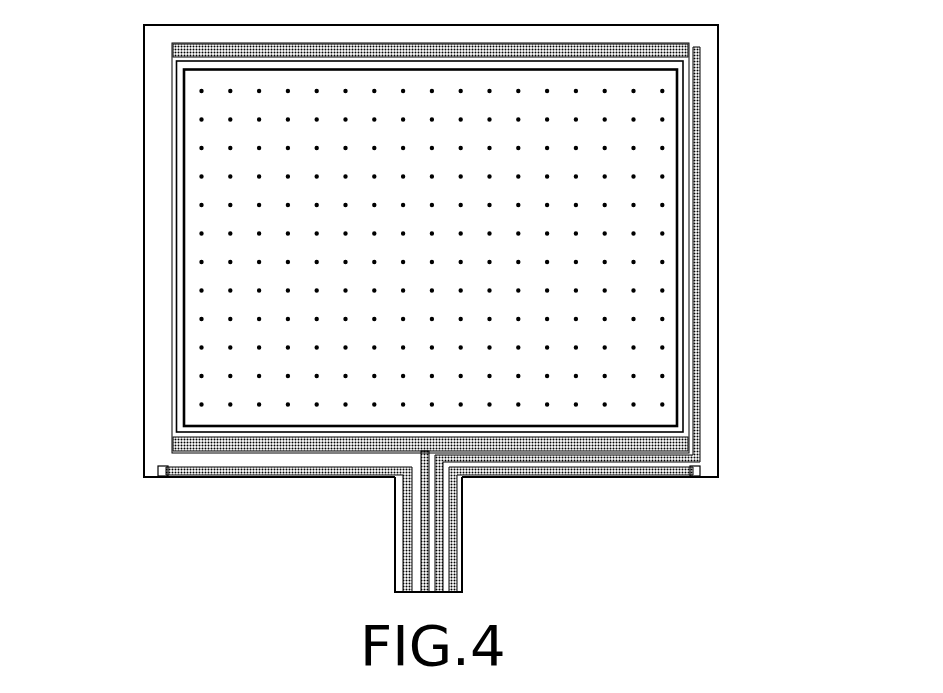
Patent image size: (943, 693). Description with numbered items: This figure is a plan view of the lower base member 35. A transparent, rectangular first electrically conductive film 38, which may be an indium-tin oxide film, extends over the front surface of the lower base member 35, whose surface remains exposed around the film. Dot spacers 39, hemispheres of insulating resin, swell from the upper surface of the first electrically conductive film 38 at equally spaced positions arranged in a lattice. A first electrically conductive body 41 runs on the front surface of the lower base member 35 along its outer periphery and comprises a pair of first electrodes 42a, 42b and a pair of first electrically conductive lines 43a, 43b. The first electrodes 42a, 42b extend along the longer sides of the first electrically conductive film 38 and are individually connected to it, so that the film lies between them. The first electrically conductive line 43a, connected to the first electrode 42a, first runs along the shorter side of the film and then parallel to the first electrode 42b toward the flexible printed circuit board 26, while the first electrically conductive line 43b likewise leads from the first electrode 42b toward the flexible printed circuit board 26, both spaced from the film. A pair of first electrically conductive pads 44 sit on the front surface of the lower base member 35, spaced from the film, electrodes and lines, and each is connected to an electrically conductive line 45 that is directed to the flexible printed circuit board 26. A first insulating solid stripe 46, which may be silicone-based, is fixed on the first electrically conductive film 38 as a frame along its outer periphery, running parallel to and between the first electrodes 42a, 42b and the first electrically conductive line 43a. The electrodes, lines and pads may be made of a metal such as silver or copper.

The flexible printed circuit board 26 is at (462, 557).
The lower base member 35 is at (719, 60).
The first electrically conductive film 38 is at (197, 127).
The dot spacers 39 is at (199, 176).
The first electrically conductive body 41 is at (700, 228).
The first electrode 42a is at (174, 48).
The first electrode 42b is at (174, 444).
The first electrically conductive line 43a is at (701, 352).
The first electrically conductive line 43b is at (421, 558).
The first electrically conductive pad 44 is at (163, 477).
The electrically conductive line 45 is at (257, 476).
The first insulating solid stripe 46 is at (176, 247).